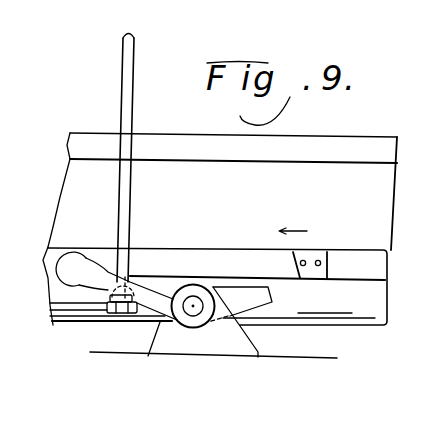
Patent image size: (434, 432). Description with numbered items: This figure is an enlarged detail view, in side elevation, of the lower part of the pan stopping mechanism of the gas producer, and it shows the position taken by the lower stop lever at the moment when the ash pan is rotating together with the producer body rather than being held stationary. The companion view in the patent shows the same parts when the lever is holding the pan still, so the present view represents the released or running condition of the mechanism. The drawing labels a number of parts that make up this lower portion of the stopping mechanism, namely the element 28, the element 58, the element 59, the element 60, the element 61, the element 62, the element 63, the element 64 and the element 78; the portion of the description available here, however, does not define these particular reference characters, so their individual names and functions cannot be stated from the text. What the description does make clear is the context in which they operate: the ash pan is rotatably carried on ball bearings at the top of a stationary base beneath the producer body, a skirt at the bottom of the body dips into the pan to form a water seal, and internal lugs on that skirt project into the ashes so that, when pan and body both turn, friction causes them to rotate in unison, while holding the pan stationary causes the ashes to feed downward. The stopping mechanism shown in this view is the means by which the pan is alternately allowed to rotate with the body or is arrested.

The base plate 28 is at (284, 358).
The operating handle 58 is at (131, 203).
The lever arm 59 is at (77, 283).
The roller 60 is at (192, 309).
The support bracket 61 is at (242, 349).
The latch plate 62 is at (244, 296).
The apertured plate 63 is at (322, 279).
The guide channel 64 is at (356, 259).
The guide bar 78 is at (327, 171).